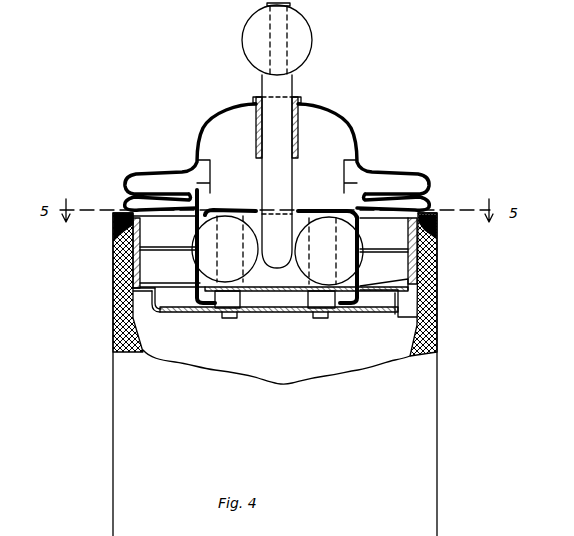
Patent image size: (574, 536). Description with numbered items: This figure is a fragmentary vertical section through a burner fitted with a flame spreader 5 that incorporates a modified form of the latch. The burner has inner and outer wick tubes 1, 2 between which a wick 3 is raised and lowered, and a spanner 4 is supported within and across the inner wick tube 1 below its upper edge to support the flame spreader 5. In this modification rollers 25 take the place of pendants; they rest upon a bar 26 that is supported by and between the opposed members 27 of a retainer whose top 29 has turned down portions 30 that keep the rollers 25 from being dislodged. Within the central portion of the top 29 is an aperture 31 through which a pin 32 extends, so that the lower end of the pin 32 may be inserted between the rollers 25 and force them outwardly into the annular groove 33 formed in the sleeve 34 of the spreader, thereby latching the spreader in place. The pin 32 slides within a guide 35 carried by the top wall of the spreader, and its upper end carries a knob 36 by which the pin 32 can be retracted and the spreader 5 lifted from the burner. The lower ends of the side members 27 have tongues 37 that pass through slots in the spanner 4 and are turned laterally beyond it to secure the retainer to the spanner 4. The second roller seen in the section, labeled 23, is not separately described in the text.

The inner wick tube 1 is at (418, 323).
The outer wick tube 2 is at (437, 277).
The wick 3 is at (433, 303).
The spanner 4 is at (155, 317).
The flame spreader 5 is at (277, 157).
The roller 23 is at (329, 251).
The rollers 25 is at (225, 249).
The bar 26 is at (282, 309).
The opposed members 27 is at (220, 312).
The top 29 is at (235, 209).
The turned down portions 30 is at (298, 214).
The aperture 31 is at (298, 222).
The pin 32 is at (300, 171).
The annular groove 33 is at (362, 236).
The sleeve 34 is at (200, 148).
The guide 35 is at (300, 127).
The knob 36 is at (312, 35).
The tongues 37 is at (229, 318).